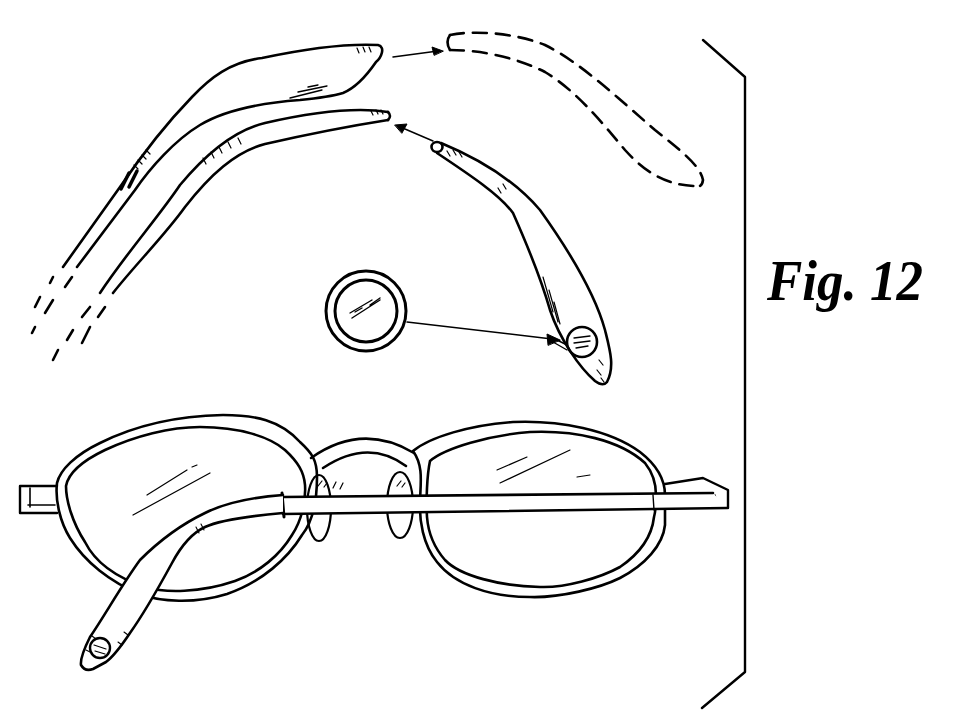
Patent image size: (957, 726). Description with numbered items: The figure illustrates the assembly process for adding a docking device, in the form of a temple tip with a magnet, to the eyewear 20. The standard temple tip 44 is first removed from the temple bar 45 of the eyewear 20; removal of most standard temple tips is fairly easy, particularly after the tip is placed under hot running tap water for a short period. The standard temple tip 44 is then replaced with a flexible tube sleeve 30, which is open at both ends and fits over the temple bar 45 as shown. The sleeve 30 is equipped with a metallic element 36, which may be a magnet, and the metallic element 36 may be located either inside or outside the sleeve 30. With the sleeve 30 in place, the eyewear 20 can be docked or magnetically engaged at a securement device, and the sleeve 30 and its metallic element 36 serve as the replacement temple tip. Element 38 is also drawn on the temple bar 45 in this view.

The eyewear 20 is at (440, 553).
The flexible tube sleeve 30 is at (560, 240).
The metallic element 36 is at (357, 330).
The temple end pin 38 is at (436, 138).
The standard temple tip 44 is at (240, 78).
The temple bar 45 is at (107, 208).